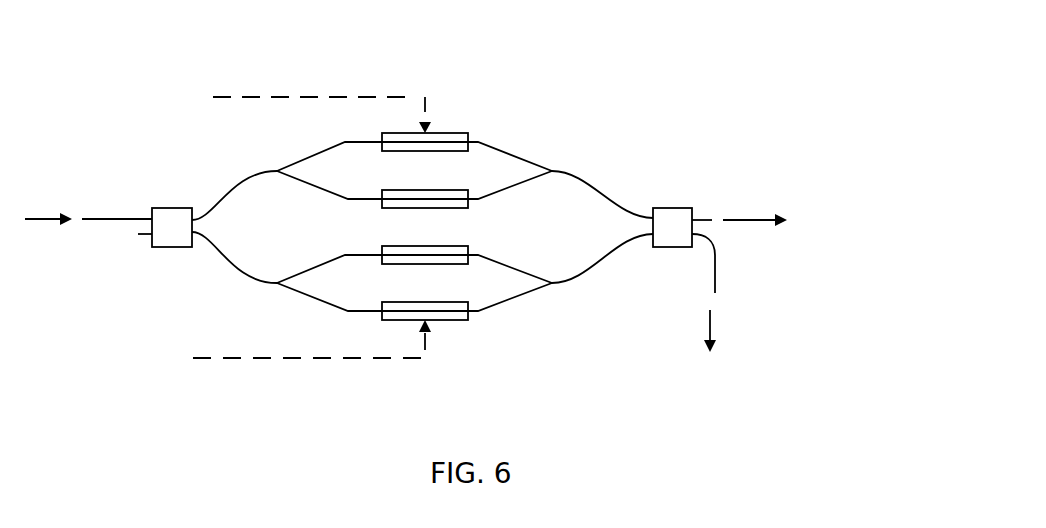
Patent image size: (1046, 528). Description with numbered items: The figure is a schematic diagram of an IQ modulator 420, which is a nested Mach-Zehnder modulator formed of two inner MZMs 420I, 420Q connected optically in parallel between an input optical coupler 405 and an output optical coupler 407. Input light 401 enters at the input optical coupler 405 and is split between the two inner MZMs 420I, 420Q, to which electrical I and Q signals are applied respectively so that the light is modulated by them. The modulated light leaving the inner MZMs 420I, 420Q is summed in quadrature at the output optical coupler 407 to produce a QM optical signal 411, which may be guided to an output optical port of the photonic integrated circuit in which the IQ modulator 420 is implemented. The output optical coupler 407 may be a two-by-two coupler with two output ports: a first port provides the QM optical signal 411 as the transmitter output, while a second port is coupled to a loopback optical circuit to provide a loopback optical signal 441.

The input light 401 is at (88, 203).
The input optical coupler 405 is at (170, 207).
The output optical coupler 407 is at (675, 207).
The QM optical signal 411 is at (747, 218).
The IQ modulator 420 is at (438, 50).
The inner MZM 420I is at (478, 108).
The inner MZM 420Q is at (499, 348).
The loopback optical signal 441 is at (702, 337).